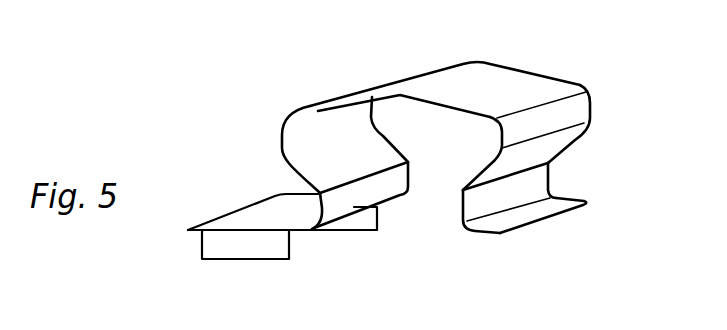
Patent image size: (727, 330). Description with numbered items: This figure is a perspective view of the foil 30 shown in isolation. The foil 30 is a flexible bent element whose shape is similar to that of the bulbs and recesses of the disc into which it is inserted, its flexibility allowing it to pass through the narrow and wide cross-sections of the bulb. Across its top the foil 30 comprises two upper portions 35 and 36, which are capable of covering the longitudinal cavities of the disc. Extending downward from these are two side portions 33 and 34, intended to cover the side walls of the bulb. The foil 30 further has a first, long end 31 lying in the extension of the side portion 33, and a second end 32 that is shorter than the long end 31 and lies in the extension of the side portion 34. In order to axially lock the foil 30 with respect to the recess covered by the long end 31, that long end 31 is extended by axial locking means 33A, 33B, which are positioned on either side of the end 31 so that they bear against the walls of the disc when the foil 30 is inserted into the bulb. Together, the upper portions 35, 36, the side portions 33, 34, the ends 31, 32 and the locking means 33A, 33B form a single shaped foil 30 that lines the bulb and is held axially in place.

The foil 30 is at (238, 110).
The first, long end 31 is at (270, 218).
The second end 32 is at (527, 212).
The side portion 33 is at (328, 203).
The axial locking means 33A is at (220, 248).
The axial locking means 33B is at (367, 220).
The side portion 34 is at (533, 186).
The upper portion 35 is at (381, 89).
The upper portion 36 is at (497, 90).